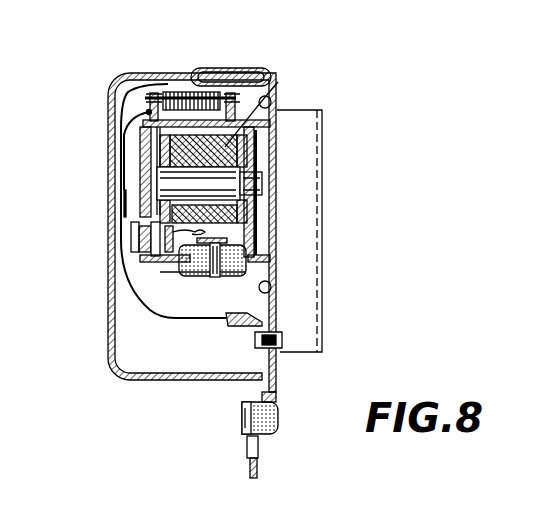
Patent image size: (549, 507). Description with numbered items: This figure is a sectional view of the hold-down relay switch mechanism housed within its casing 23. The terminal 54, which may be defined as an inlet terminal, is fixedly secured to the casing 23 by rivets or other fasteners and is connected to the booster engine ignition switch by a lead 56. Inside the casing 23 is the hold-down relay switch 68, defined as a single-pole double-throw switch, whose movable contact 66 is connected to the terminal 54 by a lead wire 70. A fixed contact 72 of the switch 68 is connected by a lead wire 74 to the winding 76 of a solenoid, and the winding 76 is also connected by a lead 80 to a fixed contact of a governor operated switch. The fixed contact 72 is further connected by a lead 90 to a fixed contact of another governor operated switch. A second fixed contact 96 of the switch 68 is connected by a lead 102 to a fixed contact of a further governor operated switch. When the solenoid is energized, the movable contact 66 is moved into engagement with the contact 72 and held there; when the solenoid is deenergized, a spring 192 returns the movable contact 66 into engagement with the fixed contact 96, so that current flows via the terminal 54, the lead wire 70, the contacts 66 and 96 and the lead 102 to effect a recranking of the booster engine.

The casing 23 is at (113, 80).
The lead wire 70 is at (150, 86).
The lead 80 is at (177, 118).
The spring 192 is at (198, 138).
The movable contact 66 is at (157, 176).
The lead 102 is at (125, 208).
The fixed contact 96 is at (133, 243).
The hold-down relay switch 68 is at (148, 267).
The fixed contact 72 is at (158, 262).
The lead 90 is at (168, 270).
The winding 76 is at (256, 201).
The lead wire 74 is at (255, 229).
The terminal 54 is at (264, 433).
The lead 56 is at (250, 466).